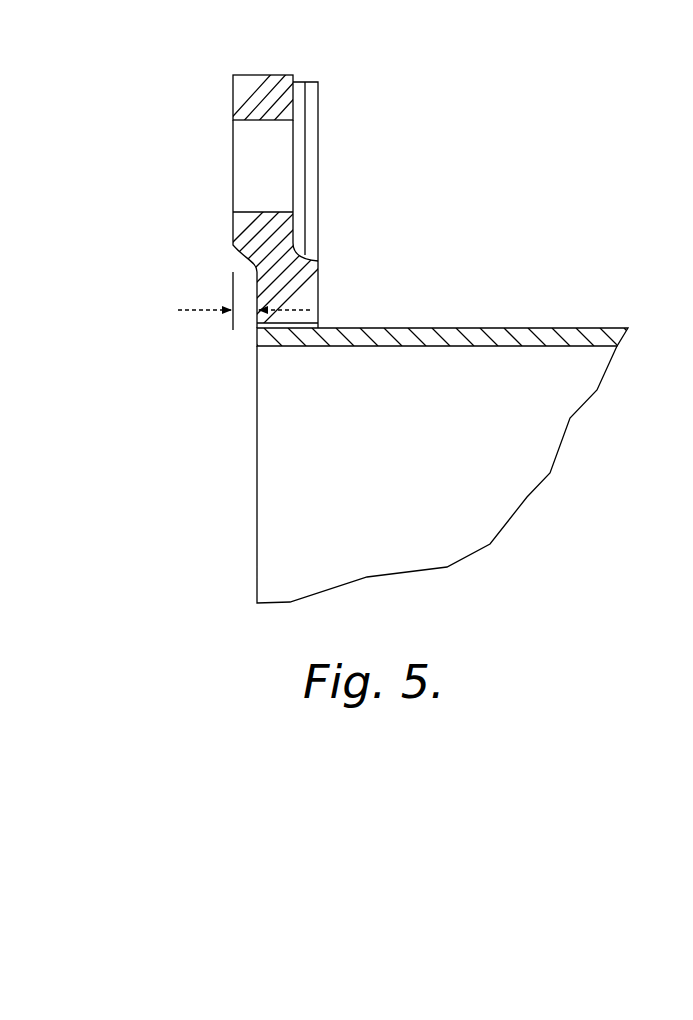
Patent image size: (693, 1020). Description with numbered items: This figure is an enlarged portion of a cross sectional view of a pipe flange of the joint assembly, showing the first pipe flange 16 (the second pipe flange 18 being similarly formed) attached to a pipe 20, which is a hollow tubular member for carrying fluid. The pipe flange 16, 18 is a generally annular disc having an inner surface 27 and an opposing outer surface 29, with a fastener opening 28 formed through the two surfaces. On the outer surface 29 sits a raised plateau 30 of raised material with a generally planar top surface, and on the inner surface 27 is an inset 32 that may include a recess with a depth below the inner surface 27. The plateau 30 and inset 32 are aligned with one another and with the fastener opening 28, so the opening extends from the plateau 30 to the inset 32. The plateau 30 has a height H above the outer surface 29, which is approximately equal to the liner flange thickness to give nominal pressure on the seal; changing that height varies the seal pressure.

The first pipe flange 16 is at (284, 174).
The second pipe flange 18 is at (332, 62).
The pipe 20 is at (547, 433).
The inner surface 27 is at (319, 130).
The fastener opening 28 is at (231, 165).
The outer surface 29 is at (232, 98).
The plateau 30 is at (231, 247).
The inset 32 is at (315, 213).